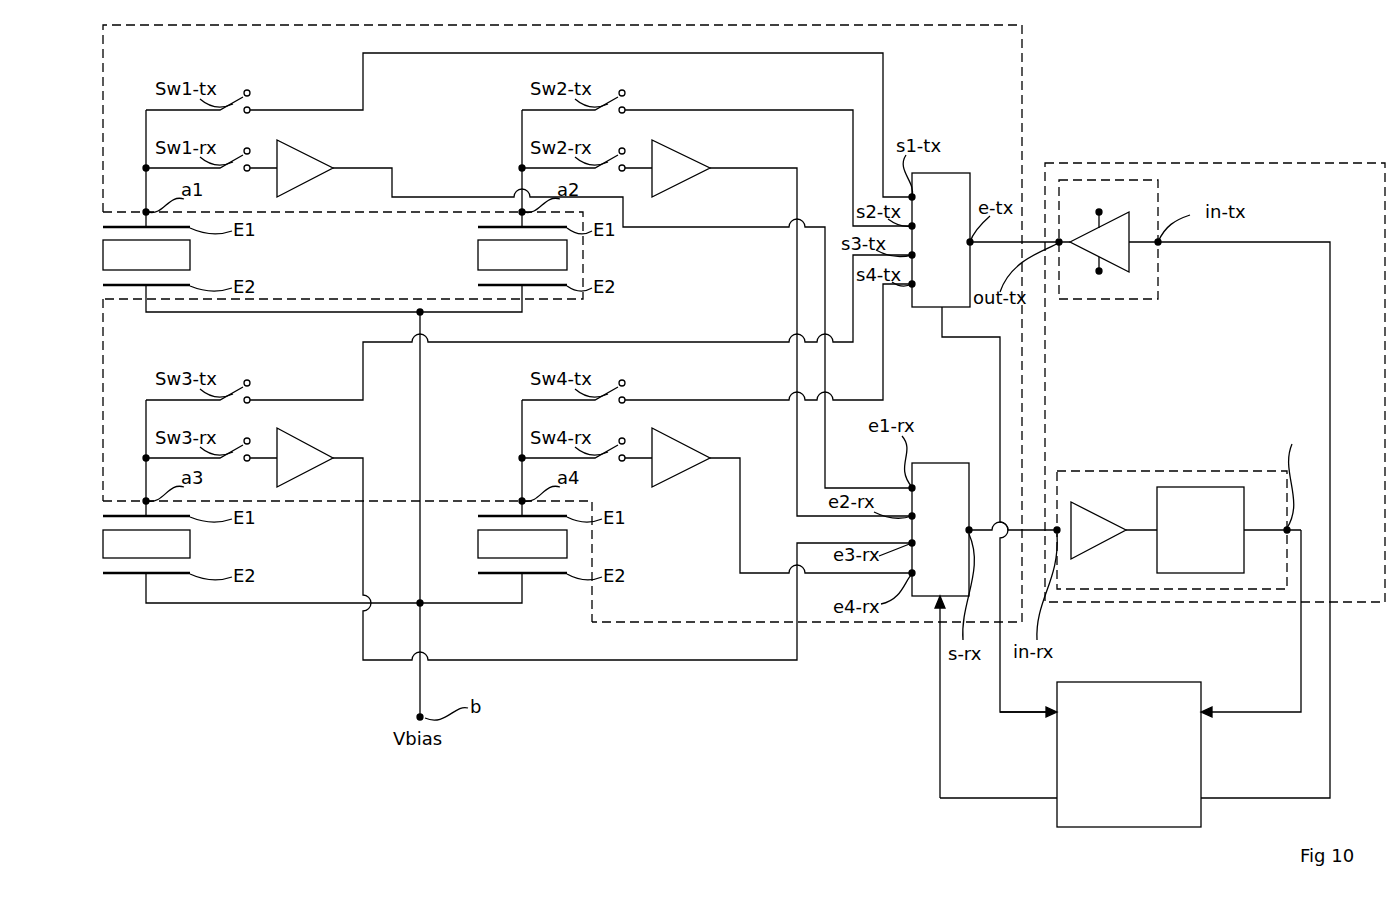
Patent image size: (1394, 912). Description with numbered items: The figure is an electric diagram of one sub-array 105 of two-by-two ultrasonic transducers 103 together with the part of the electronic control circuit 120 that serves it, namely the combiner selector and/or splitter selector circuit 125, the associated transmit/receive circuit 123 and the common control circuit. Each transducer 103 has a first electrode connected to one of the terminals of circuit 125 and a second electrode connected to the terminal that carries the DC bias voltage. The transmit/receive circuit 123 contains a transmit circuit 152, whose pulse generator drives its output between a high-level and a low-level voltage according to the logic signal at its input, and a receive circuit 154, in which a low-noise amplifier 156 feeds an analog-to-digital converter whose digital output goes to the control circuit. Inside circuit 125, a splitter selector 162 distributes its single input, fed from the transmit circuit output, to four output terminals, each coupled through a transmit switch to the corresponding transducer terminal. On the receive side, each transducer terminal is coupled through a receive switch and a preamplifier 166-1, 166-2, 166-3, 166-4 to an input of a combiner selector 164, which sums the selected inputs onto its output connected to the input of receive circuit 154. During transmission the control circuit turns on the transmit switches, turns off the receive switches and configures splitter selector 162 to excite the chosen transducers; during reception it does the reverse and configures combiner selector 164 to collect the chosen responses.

The transducer 103 is at (103, 256).
The sub-array 105 is at (87, 202).
The electronic control circuit 120 is at (817, 768).
The transmit/receive circuit 123 is at (1222, 163).
The combiner selector and/or splitter selector circuit 125 is at (1022, 93).
The transmit circuit 152 is at (1128, 299).
The receive circuit 154 is at (1182, 500).
The amplifier 156 is at (1098, 546).
The splitter selector circuit 162 is at (970, 173).
The combiner selector circuit 164 is at (928, 598).
The preamplifier 166-1 is at (310, 157).
The preamplifier 166-2 is at (686, 157).
The preamplifier 166-3 is at (310, 447).
The preamplifier 166-4 is at (686, 447).